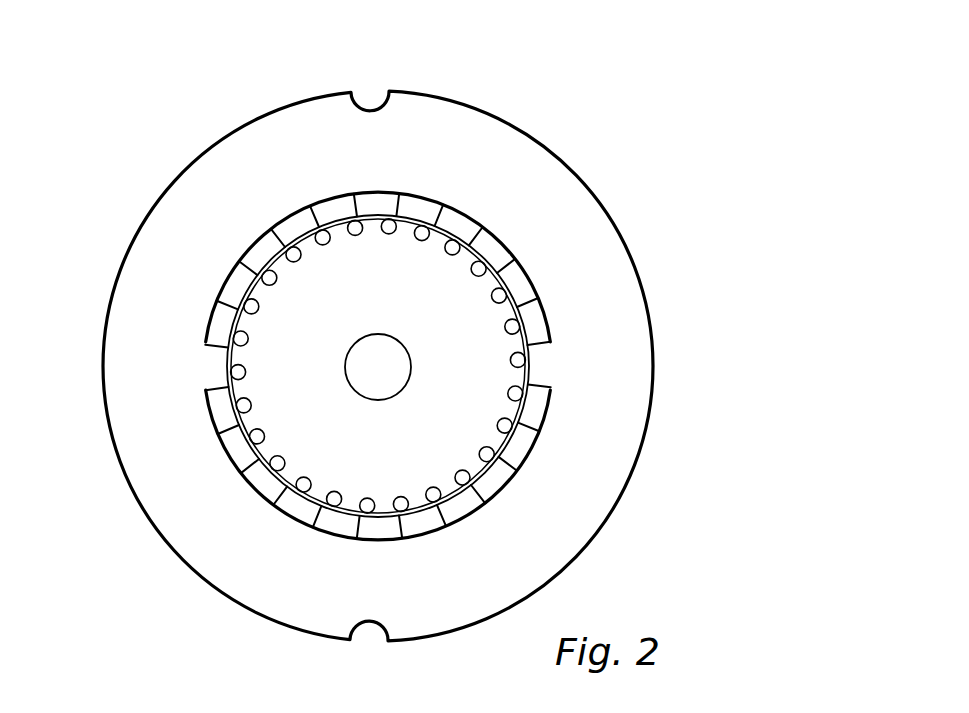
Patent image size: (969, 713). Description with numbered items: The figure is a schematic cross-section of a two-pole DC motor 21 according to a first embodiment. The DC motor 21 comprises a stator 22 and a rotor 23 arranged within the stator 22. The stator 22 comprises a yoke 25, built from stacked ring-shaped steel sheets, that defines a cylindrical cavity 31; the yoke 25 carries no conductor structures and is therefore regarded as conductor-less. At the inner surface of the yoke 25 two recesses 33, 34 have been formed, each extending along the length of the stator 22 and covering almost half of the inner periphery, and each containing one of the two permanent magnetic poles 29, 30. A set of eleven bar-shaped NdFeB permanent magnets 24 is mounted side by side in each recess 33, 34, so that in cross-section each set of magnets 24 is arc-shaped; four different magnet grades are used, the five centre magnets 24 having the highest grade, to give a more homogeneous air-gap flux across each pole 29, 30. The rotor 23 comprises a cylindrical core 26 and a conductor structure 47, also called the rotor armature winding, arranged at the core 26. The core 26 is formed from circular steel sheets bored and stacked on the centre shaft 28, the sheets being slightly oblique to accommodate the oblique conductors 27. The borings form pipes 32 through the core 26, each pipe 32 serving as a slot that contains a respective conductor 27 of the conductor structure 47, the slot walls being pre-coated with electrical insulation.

The DC motor 21 is at (381, 346).
The stator 22 is at (381, 353).
The rotor 23 is at (376, 266).
The permanent magnets 24 is at (217, 323).
The yoke 25 is at (533, 175).
The core 26 is at (473, 312).
The conductors 27 is at (513, 327).
The centre shaft 28 is at (388, 373).
The permanent magnetic pole 29 is at (287, 200).
The permanent magnetic pole 30 is at (425, 543).
The cylindrical cavity 31 is at (487, 232).
The pipes 32 is at (549, 341).
The recess 33 is at (212, 347).
The recess 34 is at (197, 398).
The conductor structure 47 is at (466, 280).